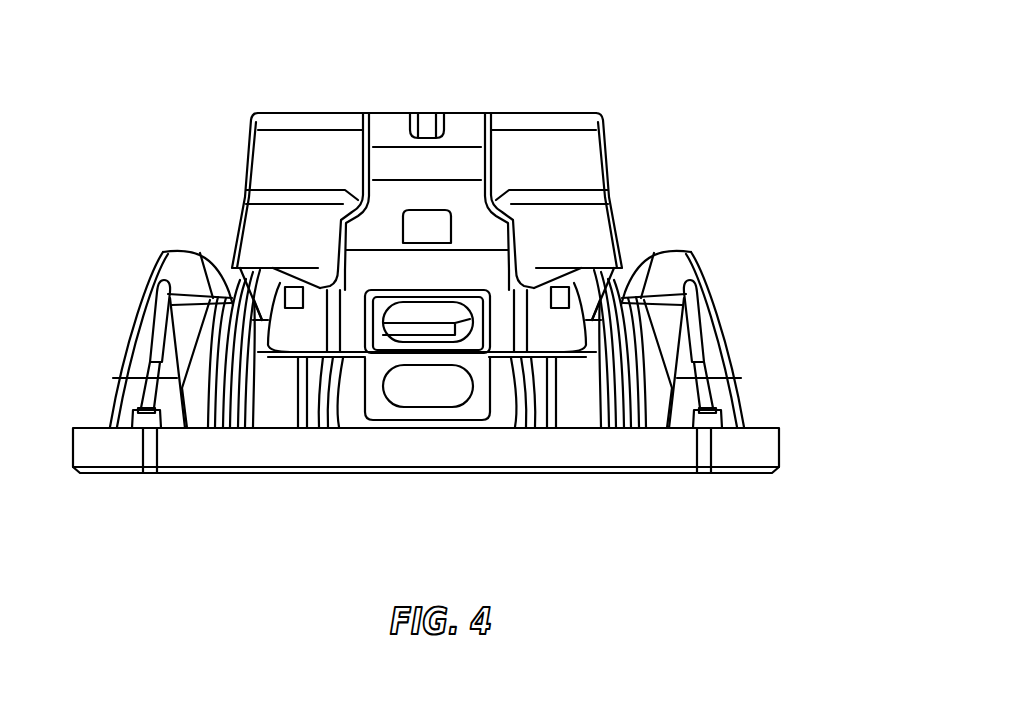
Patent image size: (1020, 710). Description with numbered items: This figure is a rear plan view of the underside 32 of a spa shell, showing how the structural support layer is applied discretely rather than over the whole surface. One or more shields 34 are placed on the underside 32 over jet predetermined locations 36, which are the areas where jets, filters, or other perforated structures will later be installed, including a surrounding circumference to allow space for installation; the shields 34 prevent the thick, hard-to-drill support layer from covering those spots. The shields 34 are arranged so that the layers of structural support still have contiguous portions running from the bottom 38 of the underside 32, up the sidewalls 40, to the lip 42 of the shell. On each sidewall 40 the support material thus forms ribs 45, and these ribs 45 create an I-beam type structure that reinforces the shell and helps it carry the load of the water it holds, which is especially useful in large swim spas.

The underside of the spa shell 32 is at (474, 278).
The shield 34 is at (387, 409).
The jet predetermined location 36 is at (433, 387).
The bottom of the underside of the spa shell 38 is at (567, 119).
The sidewall 40 is at (588, 241).
The lip 42 is at (760, 448).
The rib 45 is at (267, 402).